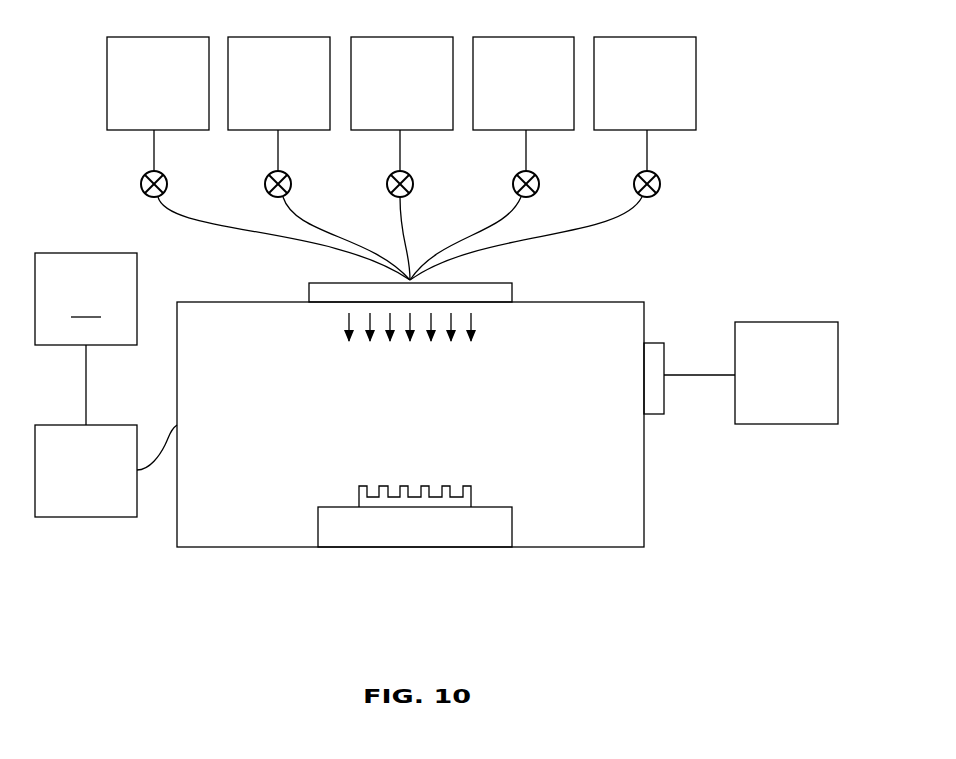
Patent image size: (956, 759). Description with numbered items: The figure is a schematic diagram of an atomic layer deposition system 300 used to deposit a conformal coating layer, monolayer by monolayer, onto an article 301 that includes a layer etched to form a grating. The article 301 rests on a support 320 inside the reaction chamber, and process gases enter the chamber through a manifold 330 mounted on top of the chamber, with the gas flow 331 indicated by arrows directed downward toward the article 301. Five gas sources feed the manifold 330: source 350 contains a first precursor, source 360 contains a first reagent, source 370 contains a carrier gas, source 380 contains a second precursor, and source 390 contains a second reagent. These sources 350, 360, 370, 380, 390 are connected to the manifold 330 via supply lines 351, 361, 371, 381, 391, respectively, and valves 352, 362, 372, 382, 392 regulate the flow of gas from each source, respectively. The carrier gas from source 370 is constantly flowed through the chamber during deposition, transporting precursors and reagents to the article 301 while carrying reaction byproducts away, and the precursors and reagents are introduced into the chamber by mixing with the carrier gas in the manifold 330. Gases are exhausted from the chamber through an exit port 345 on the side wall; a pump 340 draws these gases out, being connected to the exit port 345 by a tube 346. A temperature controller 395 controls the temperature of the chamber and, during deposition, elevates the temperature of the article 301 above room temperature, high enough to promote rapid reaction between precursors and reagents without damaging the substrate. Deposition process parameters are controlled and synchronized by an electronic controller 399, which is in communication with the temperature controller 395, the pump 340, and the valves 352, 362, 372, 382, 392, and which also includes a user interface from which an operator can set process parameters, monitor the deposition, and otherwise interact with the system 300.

The ALD system 300 is at (177, 570).
The article 301 is at (473, 482).
The substrate support 320 is at (400, 539).
The manifold 330 is at (517, 292).
The process gas flow 331 is at (477, 322).
The pump 340 is at (772, 387).
The exit port 345 is at (658, 342).
The tube 346 is at (686, 378).
The source 350 is at (143, 97).
The supply line 351 is at (152, 153).
The valve 352 is at (149, 199).
The source 360 is at (264, 97).
The supply line 361 is at (276, 153).
The valve 362 is at (273, 199).
The source 370 is at (387, 97).
The supply line 371 is at (398, 153).
The valve 372 is at (395, 199).
The source 380 is at (508, 97).
The supply line 381 is at (524, 153).
The valve 382 is at (519, 199).
The source 390 is at (630, 97).
The supply line 391 is at (645, 153).
The valve 392 is at (651, 199).
The temperature controller 395 is at (71, 485).
The electronic controller 399 is at (140, 184).